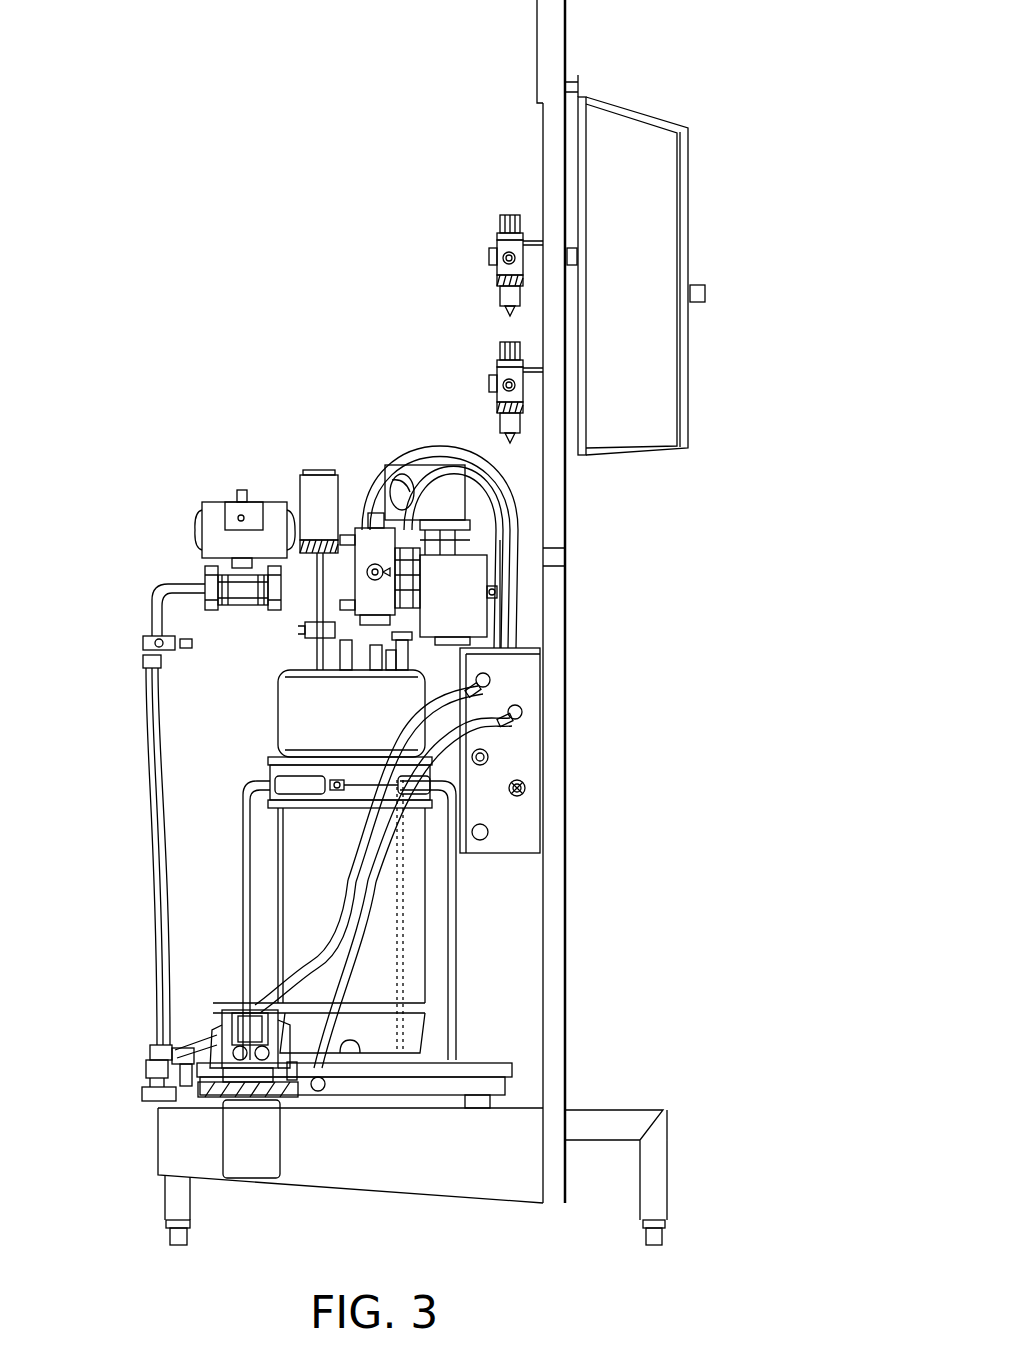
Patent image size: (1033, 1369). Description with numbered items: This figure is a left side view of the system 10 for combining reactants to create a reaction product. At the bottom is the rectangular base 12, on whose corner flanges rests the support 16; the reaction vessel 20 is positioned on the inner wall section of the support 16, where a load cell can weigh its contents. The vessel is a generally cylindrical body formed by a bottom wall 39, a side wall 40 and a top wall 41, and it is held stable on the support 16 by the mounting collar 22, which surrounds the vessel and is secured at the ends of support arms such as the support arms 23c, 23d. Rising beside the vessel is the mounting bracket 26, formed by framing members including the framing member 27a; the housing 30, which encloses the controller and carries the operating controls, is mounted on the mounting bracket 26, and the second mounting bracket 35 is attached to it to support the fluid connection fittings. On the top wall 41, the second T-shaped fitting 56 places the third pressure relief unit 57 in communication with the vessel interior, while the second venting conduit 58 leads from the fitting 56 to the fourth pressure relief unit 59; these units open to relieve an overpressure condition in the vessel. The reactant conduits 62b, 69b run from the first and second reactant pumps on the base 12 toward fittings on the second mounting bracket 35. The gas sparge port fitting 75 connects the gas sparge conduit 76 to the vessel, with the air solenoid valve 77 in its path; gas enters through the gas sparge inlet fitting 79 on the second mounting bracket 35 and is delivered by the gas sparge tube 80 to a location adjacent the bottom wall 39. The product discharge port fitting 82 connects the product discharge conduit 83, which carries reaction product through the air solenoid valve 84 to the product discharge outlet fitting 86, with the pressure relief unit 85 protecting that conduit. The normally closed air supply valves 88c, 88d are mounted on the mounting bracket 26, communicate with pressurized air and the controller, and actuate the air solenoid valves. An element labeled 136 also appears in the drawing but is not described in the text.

The system 10 is at (718, 798).
The base 12 is at (488, 1185).
The support 16 is at (485, 1063).
The reaction vessel 20 is at (318, 884).
The mounting collar 22 is at (277, 772).
The support arm 23c is at (243, 895).
The support arm 23d is at (454, 984).
The mounting bracket 26 is at (534, 52).
The framing member 27a is at (566, 556).
The housing 30 is at (612, 128).
The second mounting bracket 35 is at (528, 664).
The bottom wall 39 is at (420, 1060).
The side wall 40 is at (428, 908).
The top wall 41 is at (282, 672).
The second T-shaped fitting 56 is at (318, 595).
The third pressure relief unit 57 is at (313, 490).
The second venting conduit 58 is at (152, 580).
The fourth pressure relief unit 59 is at (215, 515).
The reactant conduit 62b is at (311, 968).
The reactant conduit 69b is at (345, 962).
The gas sparge port fitting 75 is at (410, 660).
The gas sparge conduit 76 is at (507, 582).
The air solenoid valve 77 is at (391, 652).
The gas sparge inlet fitting 79 is at (525, 790).
The gas sparge tube 80 is at (405, 938).
The product discharge port fitting 82 is at (376, 655).
The product discharge conduit 83 is at (405, 452).
The air solenoid valve 84 is at (352, 648).
The pressure relief unit 85 is at (361, 525).
The product discharge outlet fitting 86 is at (490, 757).
The air supply valve 88c is at (497, 240).
The air supply valve 88d is at (497, 367).
The enclosure 136 is at (362, 1153).